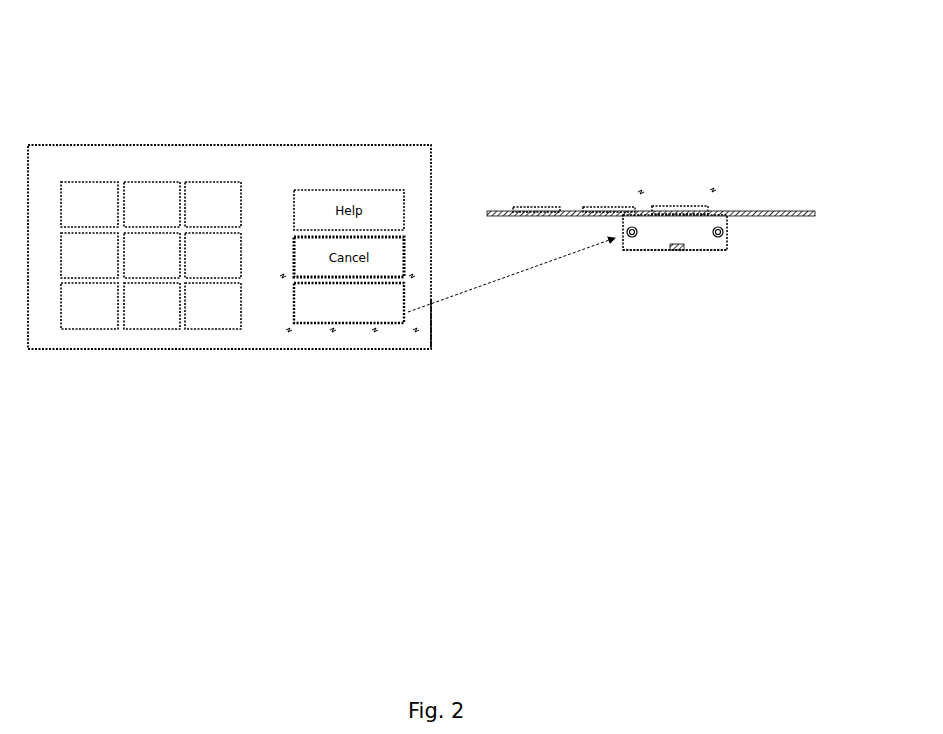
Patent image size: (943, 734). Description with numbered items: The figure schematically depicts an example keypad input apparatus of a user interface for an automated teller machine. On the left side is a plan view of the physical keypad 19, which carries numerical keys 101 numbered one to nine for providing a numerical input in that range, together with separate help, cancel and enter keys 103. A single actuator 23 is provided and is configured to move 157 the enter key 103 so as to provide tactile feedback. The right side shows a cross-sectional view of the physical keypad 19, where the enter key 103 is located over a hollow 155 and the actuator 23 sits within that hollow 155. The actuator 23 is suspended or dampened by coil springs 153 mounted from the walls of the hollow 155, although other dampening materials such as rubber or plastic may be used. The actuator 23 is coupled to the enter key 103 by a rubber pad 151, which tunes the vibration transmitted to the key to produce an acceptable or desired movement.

The physical keypad 19 is at (199, 143).
The numerical keys 101 is at (248, 384).
The enter key 103 is at (359, 323).
The actuator 23 is at (645, 219).
The rubber pad 151 is at (713, 213).
The coil springs 153 is at (727, 237).
The hollow 155 is at (647, 252).
The movement of the enter key 157 is at (427, 340).